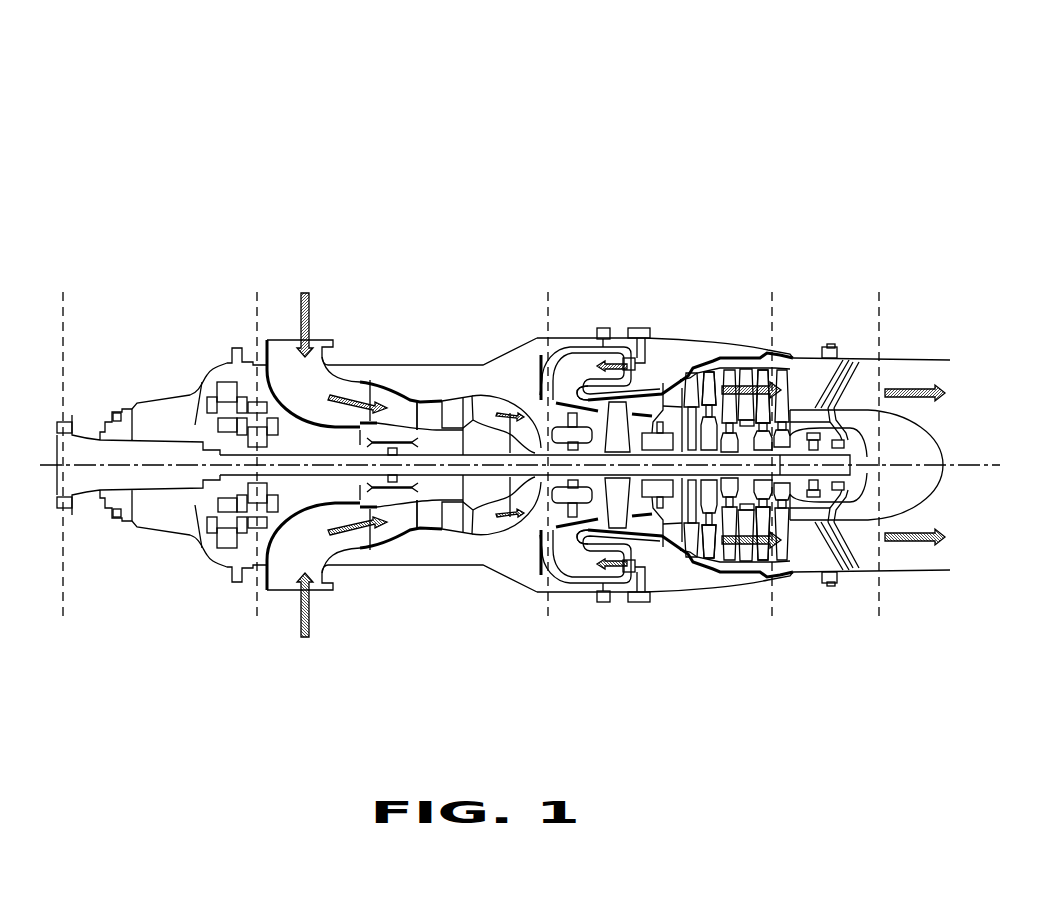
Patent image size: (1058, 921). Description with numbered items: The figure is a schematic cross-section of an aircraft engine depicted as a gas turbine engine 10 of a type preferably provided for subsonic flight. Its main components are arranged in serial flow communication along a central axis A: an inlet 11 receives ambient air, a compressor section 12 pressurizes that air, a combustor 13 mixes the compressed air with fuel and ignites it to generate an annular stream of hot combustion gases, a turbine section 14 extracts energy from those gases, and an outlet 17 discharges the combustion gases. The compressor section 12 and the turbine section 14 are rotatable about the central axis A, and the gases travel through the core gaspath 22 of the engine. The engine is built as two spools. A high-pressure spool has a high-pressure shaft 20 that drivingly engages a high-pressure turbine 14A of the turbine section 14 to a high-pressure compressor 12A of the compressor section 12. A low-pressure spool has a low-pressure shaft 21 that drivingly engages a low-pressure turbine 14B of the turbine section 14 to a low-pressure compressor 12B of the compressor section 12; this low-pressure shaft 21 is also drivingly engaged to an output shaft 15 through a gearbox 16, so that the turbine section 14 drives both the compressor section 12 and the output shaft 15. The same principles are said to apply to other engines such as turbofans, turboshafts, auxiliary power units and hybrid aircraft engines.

The gas turbine engine 10 is at (520, 377).
The inlet 11 is at (310, 280).
The compressor section 12 is at (404, 497).
The high-pressure compressor 12A is at (513, 550).
The low-pressure compressor 12B is at (428, 535).
The combustor 13 is at (610, 570).
The turbine section 14 is at (687, 476).
The high-pressure turbine 14A is at (638, 505).
The low-pressure turbine 14B is at (706, 586).
The output shaft 15 is at (137, 477).
The gearbox 16 is at (224, 366).
The outlet 17 is at (937, 357).
The high-pressure shaft 20 is at (625, 522).
The low-pressure shaft 21 is at (472, 478).
The core gaspath 22 is at (428, 415).
The central axis A is at (134, 462).